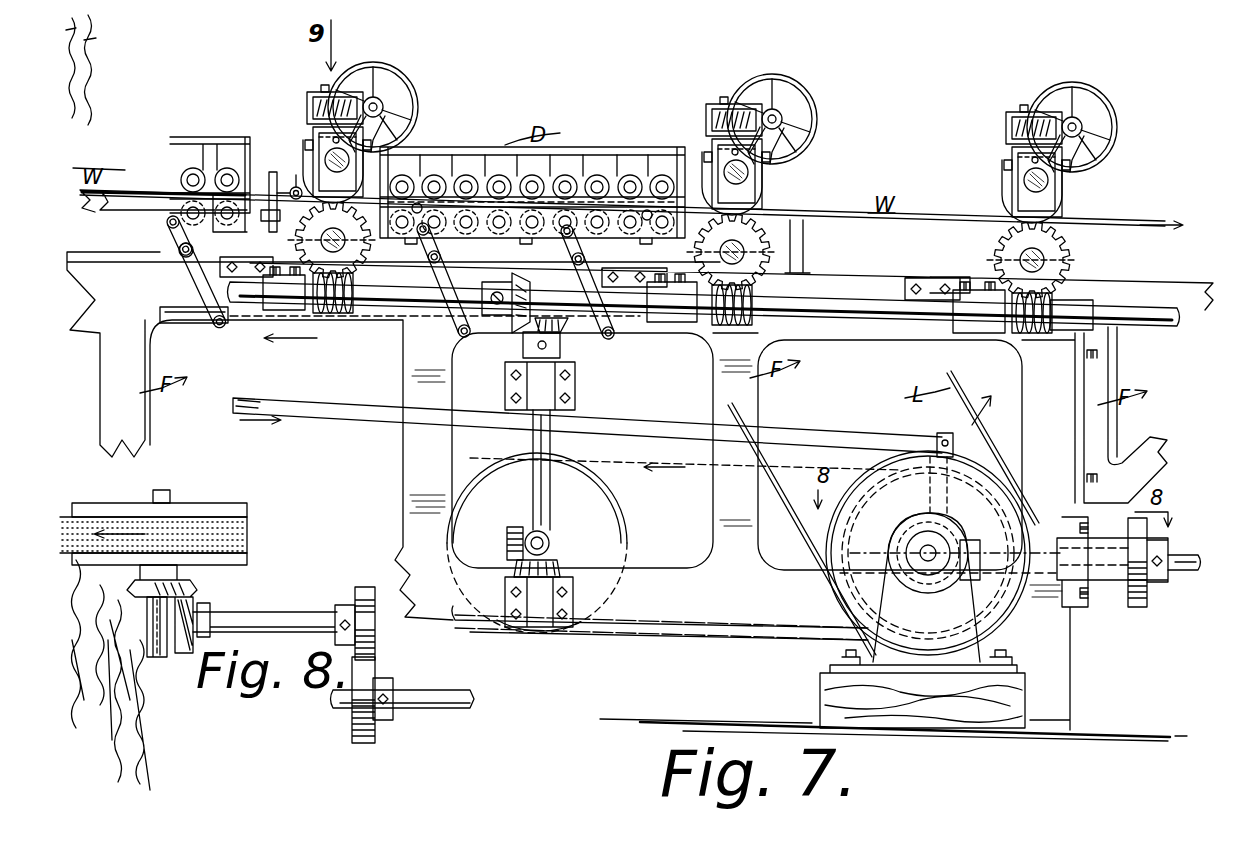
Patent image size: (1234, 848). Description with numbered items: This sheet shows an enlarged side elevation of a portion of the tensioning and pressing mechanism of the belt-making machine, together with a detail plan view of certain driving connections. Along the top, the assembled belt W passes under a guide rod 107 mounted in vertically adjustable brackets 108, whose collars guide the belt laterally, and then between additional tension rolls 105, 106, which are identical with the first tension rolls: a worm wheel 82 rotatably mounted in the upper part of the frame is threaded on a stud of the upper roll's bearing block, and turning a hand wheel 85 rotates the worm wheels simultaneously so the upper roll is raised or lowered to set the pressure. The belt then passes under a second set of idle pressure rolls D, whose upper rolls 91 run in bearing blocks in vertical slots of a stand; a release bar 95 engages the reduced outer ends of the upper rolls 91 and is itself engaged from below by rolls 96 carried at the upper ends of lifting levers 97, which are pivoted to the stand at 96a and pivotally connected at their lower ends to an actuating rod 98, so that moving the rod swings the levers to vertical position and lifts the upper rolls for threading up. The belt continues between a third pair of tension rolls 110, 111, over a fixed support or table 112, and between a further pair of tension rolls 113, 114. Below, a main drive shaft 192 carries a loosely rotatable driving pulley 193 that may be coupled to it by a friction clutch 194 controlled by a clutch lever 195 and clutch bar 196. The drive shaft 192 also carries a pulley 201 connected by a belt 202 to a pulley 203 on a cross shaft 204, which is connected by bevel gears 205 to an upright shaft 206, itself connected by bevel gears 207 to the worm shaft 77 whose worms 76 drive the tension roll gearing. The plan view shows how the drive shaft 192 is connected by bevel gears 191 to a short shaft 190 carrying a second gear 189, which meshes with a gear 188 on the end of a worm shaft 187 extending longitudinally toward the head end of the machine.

In FIG. 7, the worm 76 is at (333, 316).
In FIG. 7, the worm shaft 77 is at (252, 318).
In FIG. 7, the worm wheel 82 is at (312, 95).
In FIG. 7, the hand wheel 85 is at (384, 76).
In FIG. 7, the upper pressure rolls 91 is at (205, 170).
In FIG. 7, the release bar 95 is at (148, 203).
In FIG. 7, the rolls 96 is at (168, 223).
In FIG. 7, the lever pivot 96a is at (182, 258).
In FIG. 7, the lifting levers 97 is at (202, 290).
In FIG. 7, the actuating rod 98 is at (192, 324).
In FIG. 7, the tension roll 105 is at (312, 150).
In FIG. 7, the tension roll 106 is at (370, 318).
In FIG. 7, the guide rod 107 is at (293, 186).
In FIG. 7, the vertically adjustable brackets 108 is at (286, 216).
In FIG. 7, the tension roll 110 is at (763, 182).
In FIG. 7, the tension roll 111 is at (766, 234).
In FIG. 7, the fixed support or table 112 is at (863, 221).
In FIG. 7, the tension roll 113 is at (1068, 250).
In FIG. 7, the tension roll 114 is at (1064, 188).
In FIG. 7, the worm shaft 187 is at (1186, 572).
In FIG. 8, the worm shaft 187 is at (440, 712).
In FIG. 7, the gear 188 is at (1139, 608).
In FIG. 8, the gear 188 is at (362, 745).
In FIG. 8, the second gear 189 is at (365, 585).
In FIG. 7, the short shaft 190 is at (1052, 570).
In FIG. 8, the short shaft 190 is at (302, 613).
In FIG. 7, the bevel gears 191 is at (975, 578).
In FIG. 8, the bevel gears 191 is at (196, 586).
In FIG. 7, the main drive shaft 192 is at (920, 553).
In FIG. 8, the main drive shaft 192 is at (155, 498).
In FIG. 7, the driving pulley 193 is at (838, 595).
In FIG. 7, the friction clutch 194 is at (926, 580).
In FIG. 7, the clutch lever 195 is at (938, 505).
In FIG. 7, the clutch bar 196 is at (838, 438).
In FIG. 7, the pulley 201 is at (889, 481).
In FIG. 8, the pulley 201 is at (222, 502).
In FIG. 7, the belt 202 is at (704, 636).
In FIG. 8, the belt 202 is at (250, 540).
In FIG. 7, the pulley 203 is at (628, 543).
In FIG. 7, the cross shaft 204 is at (549, 540).
In FIG. 7, the bevel gears 205 is at (522, 535).
In FIG. 7, the upright shaft 206 is at (533, 443).
In FIG. 7, the bevel gears 207 is at (506, 326).